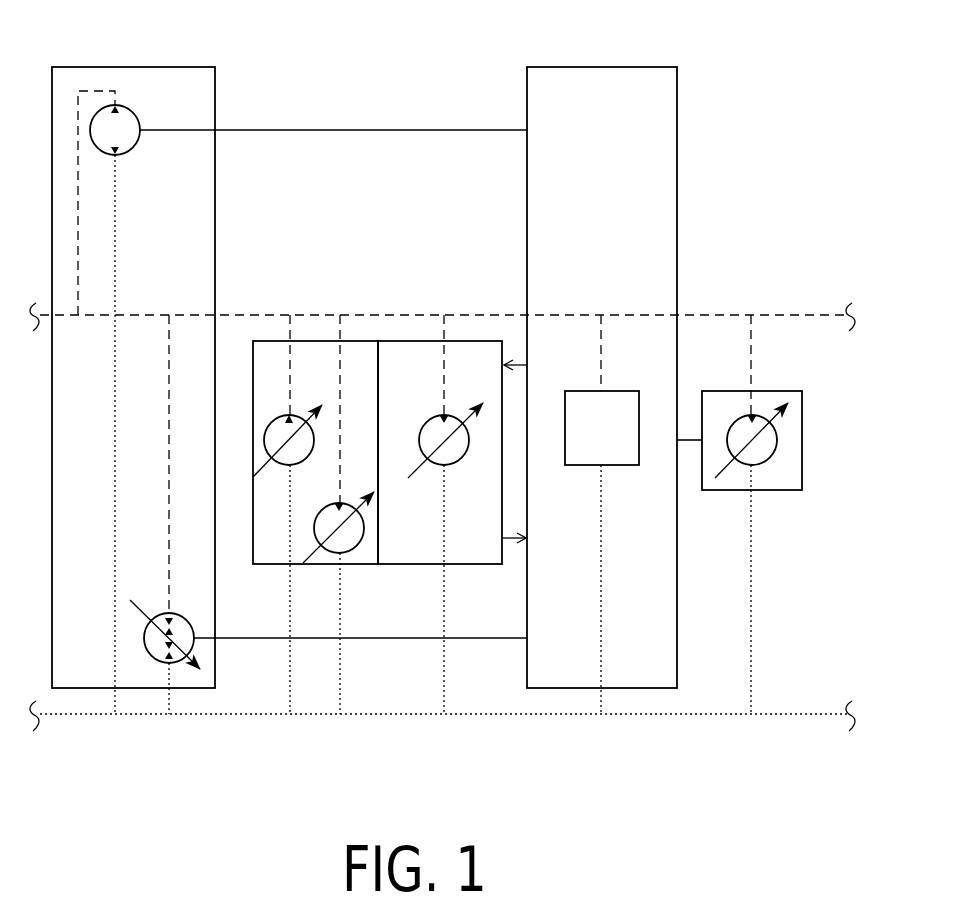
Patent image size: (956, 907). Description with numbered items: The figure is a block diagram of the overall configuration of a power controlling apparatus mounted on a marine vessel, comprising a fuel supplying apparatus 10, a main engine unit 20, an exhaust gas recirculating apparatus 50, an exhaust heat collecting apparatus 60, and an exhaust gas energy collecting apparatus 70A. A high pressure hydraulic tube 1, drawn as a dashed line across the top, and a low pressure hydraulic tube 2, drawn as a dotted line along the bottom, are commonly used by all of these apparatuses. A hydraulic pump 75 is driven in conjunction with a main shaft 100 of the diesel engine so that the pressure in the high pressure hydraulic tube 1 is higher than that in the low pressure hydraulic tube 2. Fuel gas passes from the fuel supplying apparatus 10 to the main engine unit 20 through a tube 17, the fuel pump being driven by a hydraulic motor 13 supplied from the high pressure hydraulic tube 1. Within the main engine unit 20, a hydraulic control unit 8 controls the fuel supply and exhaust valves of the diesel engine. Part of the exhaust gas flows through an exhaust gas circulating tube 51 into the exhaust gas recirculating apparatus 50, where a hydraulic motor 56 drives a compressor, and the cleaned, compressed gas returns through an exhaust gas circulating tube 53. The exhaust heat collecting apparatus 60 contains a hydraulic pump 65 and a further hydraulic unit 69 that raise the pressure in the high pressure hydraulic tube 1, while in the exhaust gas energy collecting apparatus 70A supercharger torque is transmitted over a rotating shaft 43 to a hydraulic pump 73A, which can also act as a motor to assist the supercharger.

The high pressure hydraulic tube 1 is at (797, 314).
The low pressure hydraulic tube 2 is at (270, 716).
The hydraulic control unit 8 is at (582, 465).
The fuel supplying apparatus 10 is at (802, 424).
The hydraulic motor 13 is at (762, 463).
The tube 17 is at (683, 438).
The main engine unit 20 is at (677, 185).
The rotating shaft 43 is at (328, 130).
The exhaust gas recirculating apparatus 50 is at (412, 341).
The exhaust gas circulating tube 51 is at (510, 366).
The exhaust gas circulating tube 53 is at (511, 542).
The hydraulic motor 56 is at (432, 419).
The exhaust heat collecting apparatus 60 is at (276, 341).
The hydraulic pump 65 is at (284, 417).
The variable pump/motor 69 is at (348, 505).
The exhaust gas energy collecting apparatus 70A is at (215, 67).
The hydraulic pump 73A is at (125, 107).
The hydraulic pump 75 is at (145, 636).
The main shaft 100 is at (378, 638).